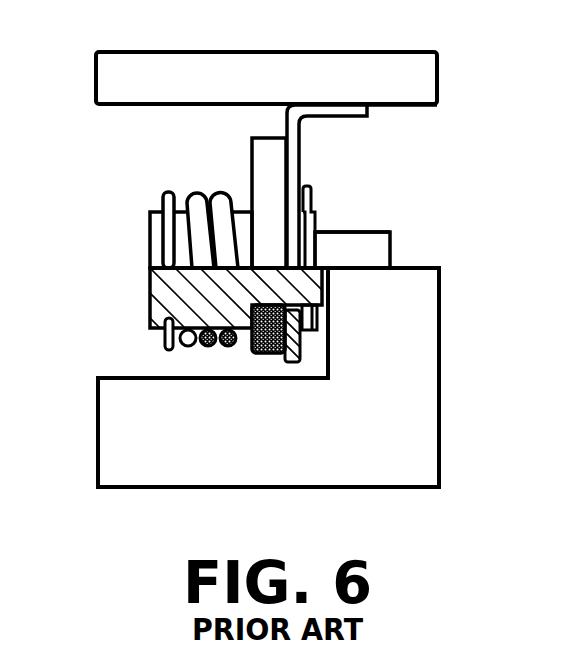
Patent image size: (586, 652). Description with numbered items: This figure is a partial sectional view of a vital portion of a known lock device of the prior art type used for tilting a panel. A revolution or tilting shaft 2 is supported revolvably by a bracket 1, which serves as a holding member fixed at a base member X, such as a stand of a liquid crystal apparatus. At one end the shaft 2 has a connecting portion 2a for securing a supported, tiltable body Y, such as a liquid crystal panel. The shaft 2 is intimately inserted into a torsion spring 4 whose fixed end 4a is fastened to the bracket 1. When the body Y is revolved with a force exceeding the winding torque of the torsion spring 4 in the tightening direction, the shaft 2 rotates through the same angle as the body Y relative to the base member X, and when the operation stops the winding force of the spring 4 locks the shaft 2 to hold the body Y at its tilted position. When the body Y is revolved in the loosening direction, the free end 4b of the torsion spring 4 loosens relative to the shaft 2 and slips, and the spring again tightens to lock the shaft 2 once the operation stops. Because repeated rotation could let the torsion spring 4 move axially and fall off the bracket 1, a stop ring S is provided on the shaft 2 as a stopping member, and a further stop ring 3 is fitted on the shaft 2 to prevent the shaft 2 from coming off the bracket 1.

The base member X is at (370, 52).
The bracket 1 is at (368, 112).
The torsion spring 4 is at (186, 168).
The stop ring S is at (163, 199).
The fixed end 4a is at (312, 200).
The revolution shaft 2 is at (384, 216).
The connecting portion 2a is at (390, 253).
The free end 4b is at (188, 348).
The stop ring 3 is at (303, 327).
The supported body Y is at (442, 445).